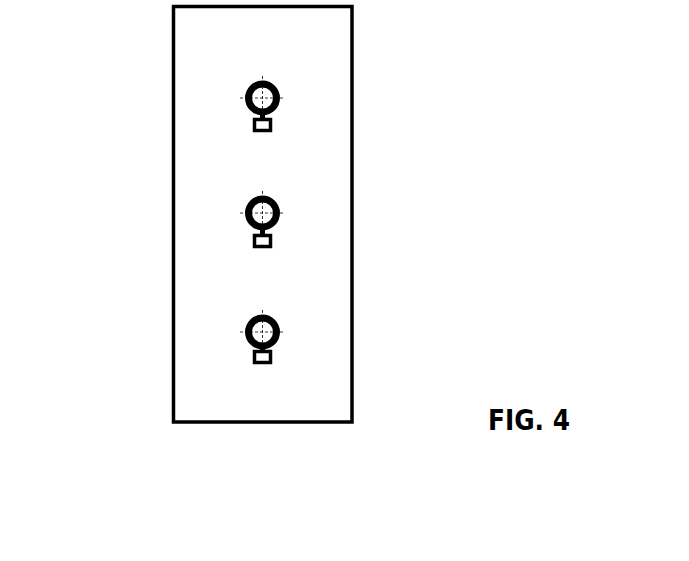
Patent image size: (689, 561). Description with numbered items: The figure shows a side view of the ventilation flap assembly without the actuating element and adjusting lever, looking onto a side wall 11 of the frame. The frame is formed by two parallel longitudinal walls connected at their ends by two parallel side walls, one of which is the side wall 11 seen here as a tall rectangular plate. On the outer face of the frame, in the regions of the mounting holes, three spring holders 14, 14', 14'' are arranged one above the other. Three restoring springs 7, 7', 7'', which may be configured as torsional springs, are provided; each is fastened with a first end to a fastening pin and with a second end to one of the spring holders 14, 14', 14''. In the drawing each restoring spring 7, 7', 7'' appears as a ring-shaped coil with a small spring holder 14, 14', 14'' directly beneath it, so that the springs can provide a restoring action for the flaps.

The restoring spring 7 is at (360, 96).
The restoring spring 7' is at (363, 207).
The restoring spring 7'' is at (364, 331).
The spring holder 14 is at (166, 133).
The spring holder 14' is at (166, 216).
The spring holder 14'' is at (166, 332).
The side wall 11 is at (308, 272).